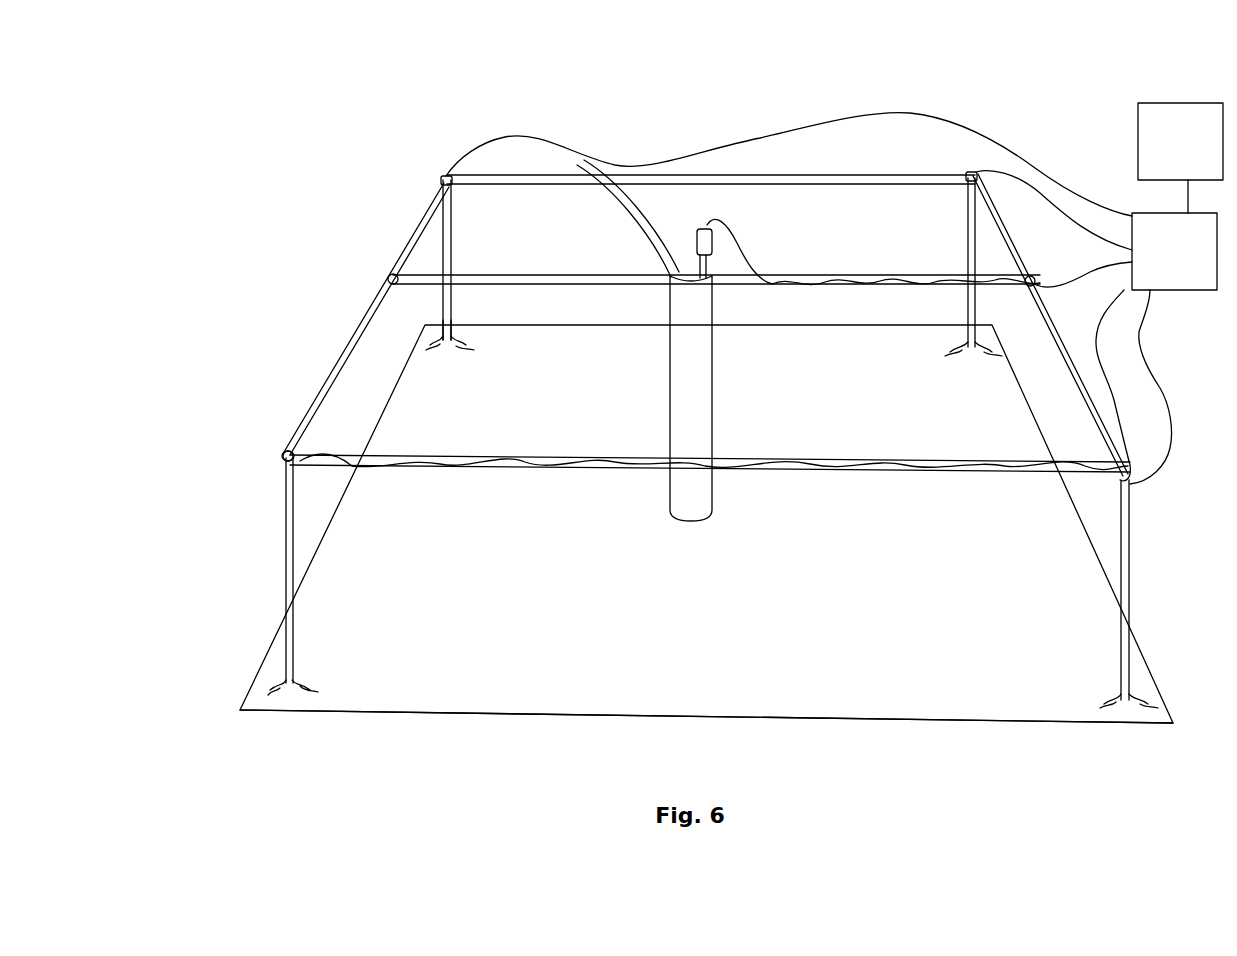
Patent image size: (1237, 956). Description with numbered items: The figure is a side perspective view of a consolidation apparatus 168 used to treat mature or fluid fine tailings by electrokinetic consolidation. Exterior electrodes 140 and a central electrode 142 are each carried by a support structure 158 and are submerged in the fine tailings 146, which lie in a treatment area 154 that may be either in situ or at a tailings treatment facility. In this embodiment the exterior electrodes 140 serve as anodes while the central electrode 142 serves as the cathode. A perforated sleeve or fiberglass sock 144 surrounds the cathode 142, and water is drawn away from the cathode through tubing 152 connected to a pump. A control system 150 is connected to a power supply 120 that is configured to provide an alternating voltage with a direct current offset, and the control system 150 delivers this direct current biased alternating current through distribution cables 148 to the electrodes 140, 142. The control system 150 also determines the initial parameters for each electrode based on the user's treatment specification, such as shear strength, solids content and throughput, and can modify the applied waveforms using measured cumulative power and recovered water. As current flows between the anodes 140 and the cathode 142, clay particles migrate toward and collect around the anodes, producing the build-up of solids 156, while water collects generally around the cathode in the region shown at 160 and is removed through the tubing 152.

The consolidation apparatus 168 is at (358, 134).
The distribution cables 148 is at (503, 136).
The exterior electrodes 140 is at (443, 234).
The tubing 152 is at (610, 197).
The support structure 158 is at (343, 345).
The build-up of solids 156 is at (458, 348).
The perforated sleeve or fiberglass sock 144 is at (667, 412).
The central electrode 142 is at (712, 264).
The fine tailings 146 is at (532, 636).
The treatment area 154 is at (395, 713).
The water collection region 160 is at (737, 535).
The control system 150 is at (1200, 154).
The power supply 120 is at (1195, 262).